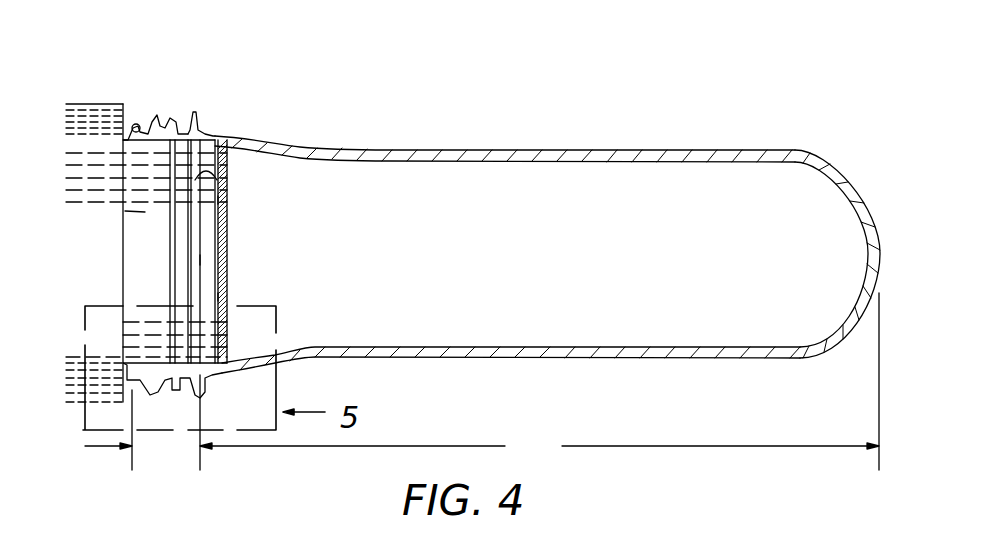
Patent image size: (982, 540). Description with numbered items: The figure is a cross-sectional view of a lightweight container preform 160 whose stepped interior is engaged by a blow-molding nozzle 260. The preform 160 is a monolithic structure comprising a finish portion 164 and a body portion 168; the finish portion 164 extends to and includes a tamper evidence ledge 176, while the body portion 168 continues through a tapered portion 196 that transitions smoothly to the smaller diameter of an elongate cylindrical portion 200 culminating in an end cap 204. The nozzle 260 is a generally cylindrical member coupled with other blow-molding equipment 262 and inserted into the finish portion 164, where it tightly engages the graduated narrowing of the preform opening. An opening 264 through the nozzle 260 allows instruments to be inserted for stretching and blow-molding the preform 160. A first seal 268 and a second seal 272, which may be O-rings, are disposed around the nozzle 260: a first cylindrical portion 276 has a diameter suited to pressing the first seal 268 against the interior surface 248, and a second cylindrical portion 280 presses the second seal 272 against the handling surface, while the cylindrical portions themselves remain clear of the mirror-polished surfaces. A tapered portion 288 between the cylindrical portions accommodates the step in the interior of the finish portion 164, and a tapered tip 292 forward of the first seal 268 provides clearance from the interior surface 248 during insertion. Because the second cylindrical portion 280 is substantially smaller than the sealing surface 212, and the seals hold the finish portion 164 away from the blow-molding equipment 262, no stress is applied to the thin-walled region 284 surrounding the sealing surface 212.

The preform 160 is at (500, 80).
The finish portion 164 is at (148, 422).
The body portion 168 is at (543, 381).
The tamper evidence ledge 176 is at (192, 114).
The tapered portion 196 is at (262, 141).
The cylindrical portion 200 is at (677, 358).
The end cap 204 is at (927, 243).
The sealing surface 212 is at (132, 126).
The interior surface 248 is at (428, 262).
The nozzle 260 is at (122, 242).
The blow-molding equipment 262 is at (87, 105).
The opening 264 is at (236, 232).
The first seal 268 is at (220, 297).
The second seal 272 is at (170, 290).
The first cylindrical portion 276 is at (205, 260).
The second cylindrical portion 280 is at (125, 211).
The thin-walled region 284 is at (140, 130).
The tapered portion 288 is at (207, 173).
The tapered tip 292 is at (221, 200).